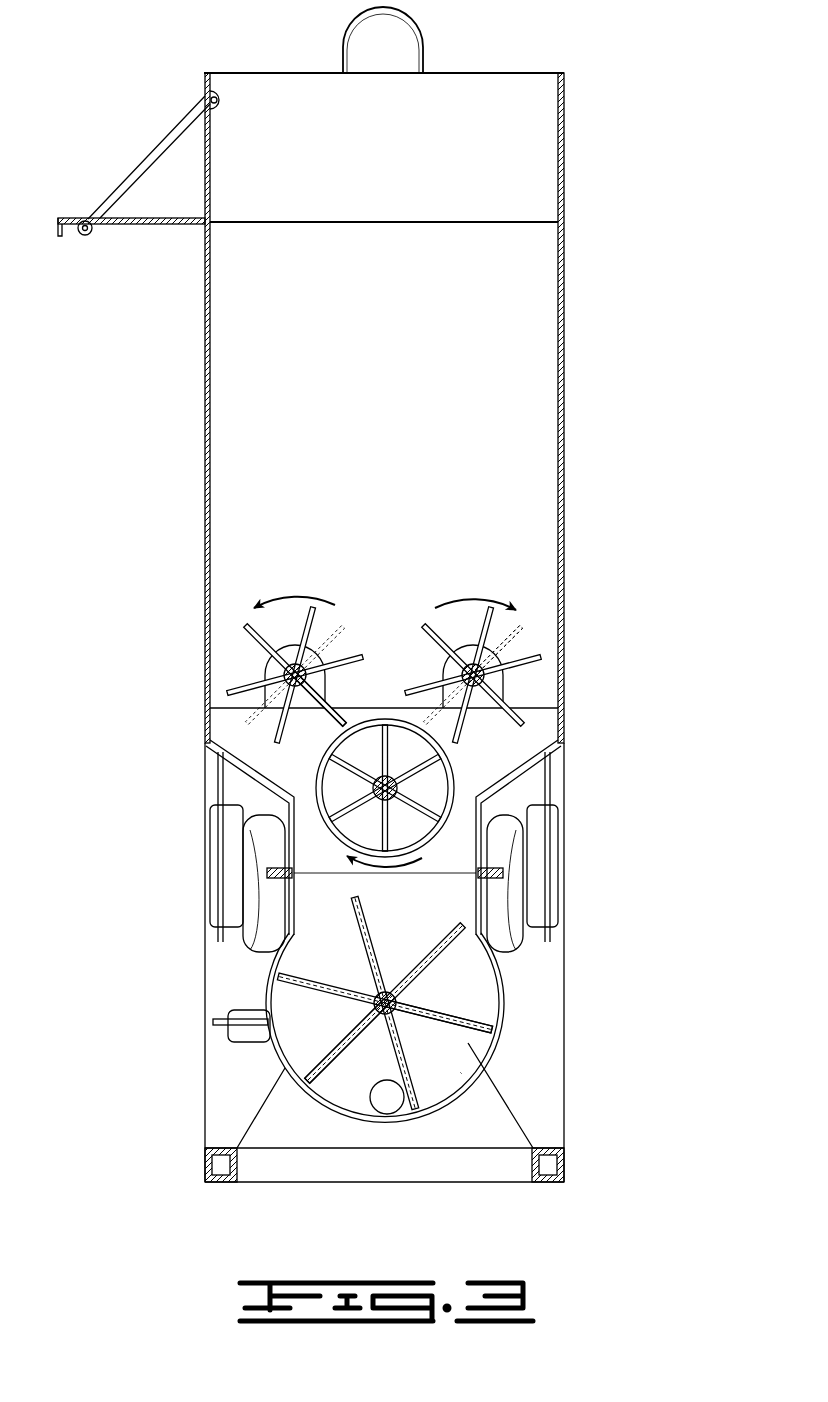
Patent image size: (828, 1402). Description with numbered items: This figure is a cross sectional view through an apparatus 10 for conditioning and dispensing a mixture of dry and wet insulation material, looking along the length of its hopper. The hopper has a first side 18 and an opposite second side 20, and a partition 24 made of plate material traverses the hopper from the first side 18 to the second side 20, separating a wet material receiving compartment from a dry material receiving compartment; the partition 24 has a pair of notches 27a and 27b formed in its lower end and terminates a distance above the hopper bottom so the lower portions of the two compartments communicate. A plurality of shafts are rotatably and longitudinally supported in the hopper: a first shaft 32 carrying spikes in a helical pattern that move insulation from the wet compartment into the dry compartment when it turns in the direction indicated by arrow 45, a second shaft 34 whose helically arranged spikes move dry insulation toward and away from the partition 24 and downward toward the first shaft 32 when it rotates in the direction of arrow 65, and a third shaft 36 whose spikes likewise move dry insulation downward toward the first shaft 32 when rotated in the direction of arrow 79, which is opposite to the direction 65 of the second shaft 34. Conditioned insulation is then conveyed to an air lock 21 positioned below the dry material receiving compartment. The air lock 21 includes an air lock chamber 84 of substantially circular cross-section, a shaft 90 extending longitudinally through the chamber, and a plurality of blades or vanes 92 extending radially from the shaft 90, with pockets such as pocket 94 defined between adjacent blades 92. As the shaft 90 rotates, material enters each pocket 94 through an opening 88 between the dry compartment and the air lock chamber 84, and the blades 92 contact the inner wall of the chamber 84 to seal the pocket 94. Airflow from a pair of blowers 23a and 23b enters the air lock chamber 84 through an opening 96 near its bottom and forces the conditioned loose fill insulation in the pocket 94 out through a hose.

The apparatus 10 is at (624, 68).
The first side 18 is at (205, 368).
The second side 20 is at (564, 375).
The air lock 21 is at (507, 1040).
The blower 23a is at (208, 862).
The blower 23b is at (562, 860).
The partition 24 is at (542, 710).
The notch 27a is at (448, 672).
The notch 27b is at (320, 682).
The first shaft 32 is at (405, 790).
The second shaft 34 is at (485, 678).
The third shaft 36 is at (280, 668).
The arrow 45 is at (380, 868).
The arrow 65 is at (470, 598).
The arrow 79 is at (300, 598).
The air lock chamber 84 is at (460, 1072).
The opening 88 is at (295, 873).
The shaft 90 is at (372, 1005).
The blades 92 is at (497, 1025).
The pocket 94 is at (468, 1045).
The opening 96 is at (392, 1113).